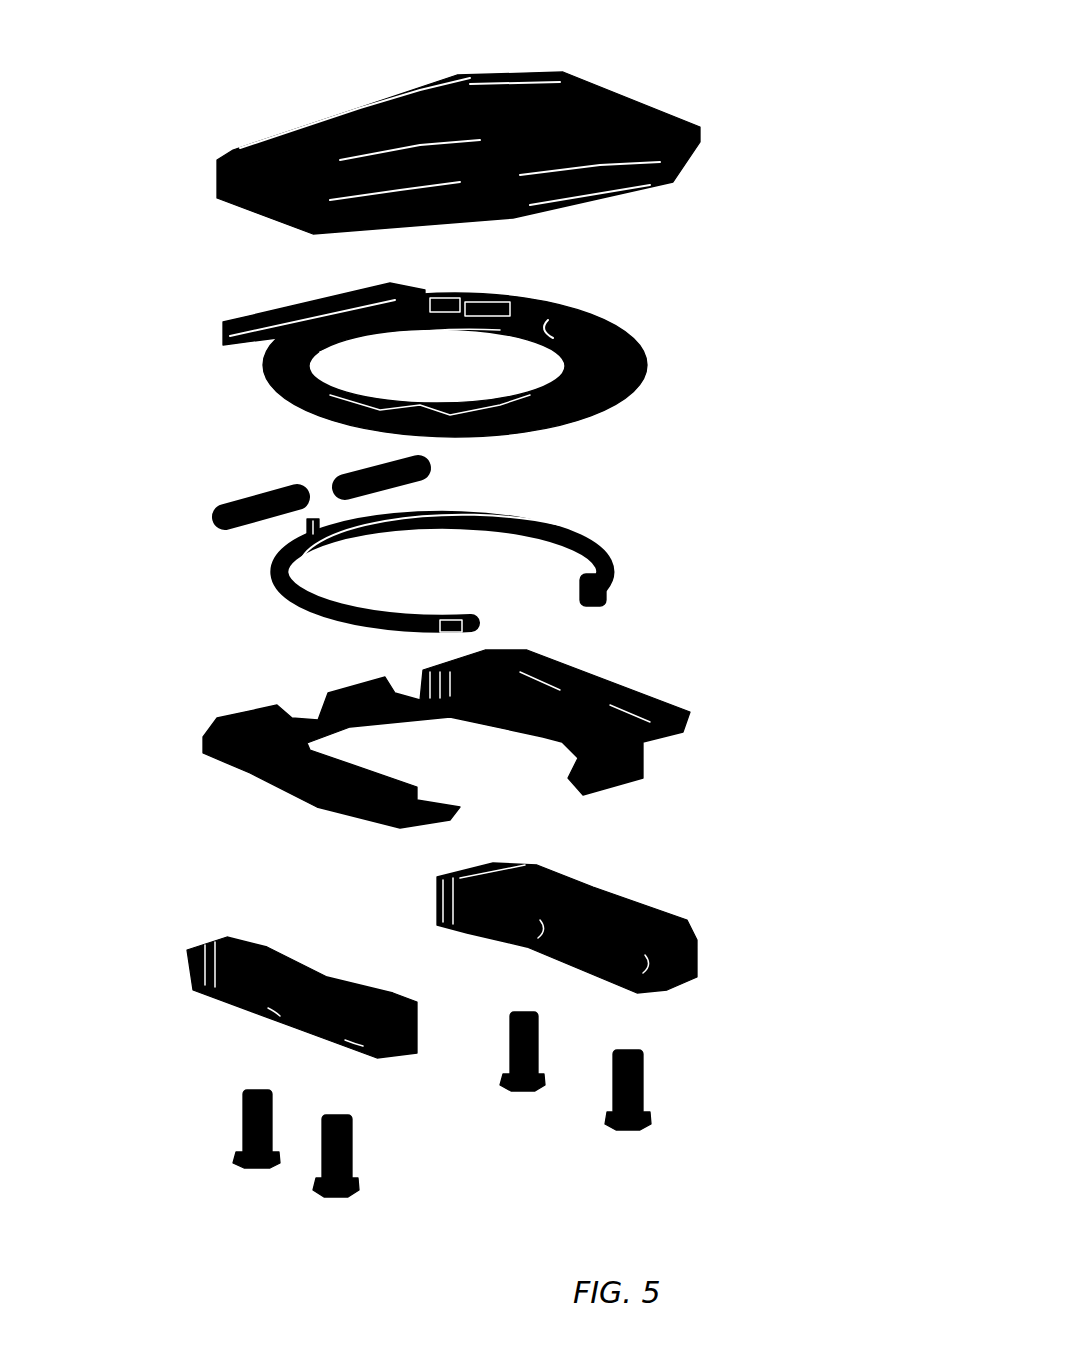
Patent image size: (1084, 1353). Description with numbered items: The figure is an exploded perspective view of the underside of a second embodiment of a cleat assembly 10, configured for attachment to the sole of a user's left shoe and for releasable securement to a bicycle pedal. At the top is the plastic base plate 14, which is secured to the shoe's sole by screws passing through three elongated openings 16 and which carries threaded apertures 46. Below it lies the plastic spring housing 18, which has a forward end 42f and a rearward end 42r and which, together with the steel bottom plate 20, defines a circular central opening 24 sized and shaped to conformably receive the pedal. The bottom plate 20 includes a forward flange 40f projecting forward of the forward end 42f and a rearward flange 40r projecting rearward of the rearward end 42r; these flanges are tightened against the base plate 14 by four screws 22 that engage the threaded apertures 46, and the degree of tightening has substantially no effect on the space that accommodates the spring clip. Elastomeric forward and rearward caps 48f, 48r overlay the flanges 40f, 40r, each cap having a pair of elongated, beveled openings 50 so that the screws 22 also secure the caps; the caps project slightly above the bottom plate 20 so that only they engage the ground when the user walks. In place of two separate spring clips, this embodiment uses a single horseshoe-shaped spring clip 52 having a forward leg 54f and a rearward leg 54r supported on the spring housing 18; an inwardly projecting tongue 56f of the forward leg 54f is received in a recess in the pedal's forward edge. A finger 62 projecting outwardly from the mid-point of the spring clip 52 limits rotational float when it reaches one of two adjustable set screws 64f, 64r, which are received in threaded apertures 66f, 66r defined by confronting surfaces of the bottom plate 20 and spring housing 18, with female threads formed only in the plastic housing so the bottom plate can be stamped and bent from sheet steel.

The cleat assembly 10 is at (786, 493).
The base plate 14 is at (695, 128).
The elongated openings 16 is at (447, 90).
The spring housing 18 is at (623, 320).
The bottom plate 20 is at (637, 782).
The screws 22 is at (318, 1168).
The central opening 24 is at (550, 307).
The forward flange 40f is at (217, 760).
The rearward flange 40r is at (677, 735).
The forward end 42f is at (307, 397).
The rearward end 42r is at (633, 337).
The threaded apertures 46 is at (547, 75).
The forward cap 48f is at (190, 982).
The rearward cap 48r is at (697, 930).
The beveled openings 50 is at (360, 1047).
The horseshoe-shaped spring clip 52 is at (553, 535).
The forward leg 54f is at (280, 593).
The rearward leg 54r is at (567, 553).
The tongue 56f is at (353, 597).
The finger 62 is at (313, 530).
The set screw 64f is at (212, 510).
The set screw 64r is at (427, 465).
The threaded aperture 66f is at (237, 347).
The threaded aperture 66r is at (427, 293).